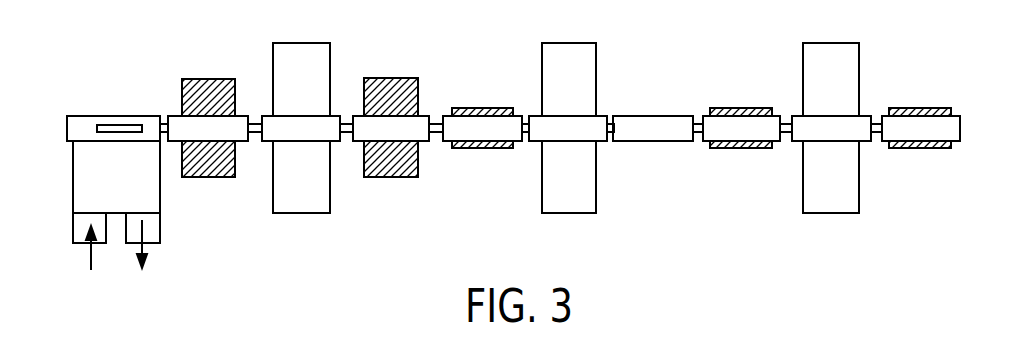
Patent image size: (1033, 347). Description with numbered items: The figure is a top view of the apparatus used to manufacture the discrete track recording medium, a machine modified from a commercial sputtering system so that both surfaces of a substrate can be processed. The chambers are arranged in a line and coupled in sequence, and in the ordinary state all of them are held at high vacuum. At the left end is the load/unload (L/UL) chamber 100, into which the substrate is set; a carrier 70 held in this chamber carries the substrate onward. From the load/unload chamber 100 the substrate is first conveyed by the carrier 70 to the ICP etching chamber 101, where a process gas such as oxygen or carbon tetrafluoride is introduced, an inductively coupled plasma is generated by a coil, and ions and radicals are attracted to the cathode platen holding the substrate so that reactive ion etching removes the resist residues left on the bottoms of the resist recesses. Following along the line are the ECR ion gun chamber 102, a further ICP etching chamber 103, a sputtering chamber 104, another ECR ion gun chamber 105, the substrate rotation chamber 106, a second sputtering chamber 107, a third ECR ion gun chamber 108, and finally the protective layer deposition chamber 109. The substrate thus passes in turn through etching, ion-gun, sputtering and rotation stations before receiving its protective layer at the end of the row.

The carrier 70 is at (112, 127).
The load/unload (L/UL) chamber 100 is at (150, 198).
The ICP etching chamber 101 is at (210, 85).
The ECR ion gun chamber 102 is at (322, 200).
The ICP etching chamber 103 is at (394, 83).
The sputtering chamber 104 is at (480, 108).
The ECR ion gun chamber 105 is at (583, 200).
The substrate rotation chamber 106 is at (649, 122).
The sputtering chamber 107 is at (736, 108).
The ECR ion gun chamber 108 is at (852, 200).
The protective layer deposition chamber 109 is at (915, 108).